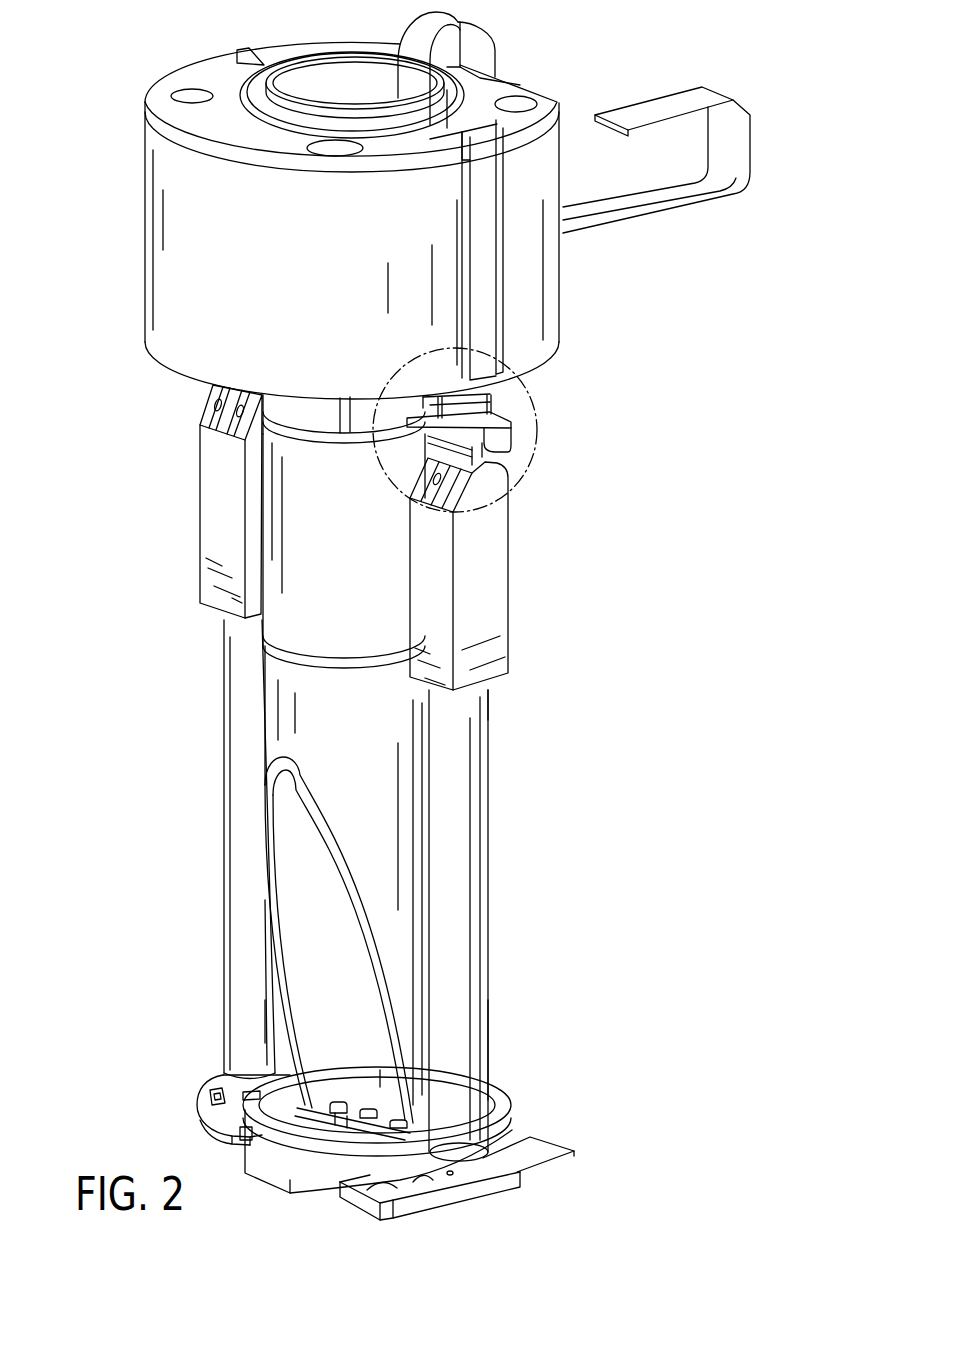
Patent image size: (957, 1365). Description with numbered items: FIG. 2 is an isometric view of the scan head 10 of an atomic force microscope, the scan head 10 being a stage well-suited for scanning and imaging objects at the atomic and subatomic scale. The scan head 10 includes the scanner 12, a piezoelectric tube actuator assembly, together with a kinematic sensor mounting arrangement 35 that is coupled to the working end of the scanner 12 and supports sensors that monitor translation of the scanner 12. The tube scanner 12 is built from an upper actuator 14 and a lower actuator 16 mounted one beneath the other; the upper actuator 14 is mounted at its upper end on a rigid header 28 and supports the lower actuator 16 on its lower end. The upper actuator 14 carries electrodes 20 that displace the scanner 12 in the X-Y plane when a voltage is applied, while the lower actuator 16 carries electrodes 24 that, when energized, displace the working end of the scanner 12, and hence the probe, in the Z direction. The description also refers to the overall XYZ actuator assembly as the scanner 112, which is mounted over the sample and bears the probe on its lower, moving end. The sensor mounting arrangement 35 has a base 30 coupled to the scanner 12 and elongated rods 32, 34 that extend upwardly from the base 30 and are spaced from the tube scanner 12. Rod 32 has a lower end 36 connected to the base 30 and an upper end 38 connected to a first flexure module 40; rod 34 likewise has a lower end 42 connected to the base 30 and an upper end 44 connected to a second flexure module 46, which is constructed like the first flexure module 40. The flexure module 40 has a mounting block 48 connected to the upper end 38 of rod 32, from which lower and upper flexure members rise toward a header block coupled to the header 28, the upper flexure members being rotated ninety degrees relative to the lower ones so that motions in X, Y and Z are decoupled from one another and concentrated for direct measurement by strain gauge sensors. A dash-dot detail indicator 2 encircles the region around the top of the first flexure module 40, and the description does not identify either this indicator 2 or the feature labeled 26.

The scan head 10 is at (72, 90).
The scanner 12 is at (258, 715).
The upper actuator 14 is at (287, 403).
The lower actuator 16 is at (290, 550).
The electrodes 20 is at (342, 413).
The electrodes 24 is at (344, 436).
The flange 26 is at (252, 102).
The header 28 is at (545, 333).
The base 30 is at (190, 1093).
The rod 32 is at (480, 836).
The rod 34 is at (248, 812).
The kinematic sensor mounting arrangement 35 is at (497, 1027).
The lower end 36 is at (473, 1163).
The upper end 38 is at (490, 703).
The first flexure module 40 is at (527, 524).
The lower end 42 is at (222, 1078).
The upper end 44 is at (222, 622).
The second flexure module 46 is at (190, 455).
The mounting block 48 is at (500, 608).
The detail view indicator 2 is at (528, 377).
The scanner 112 is at (330, 1187).